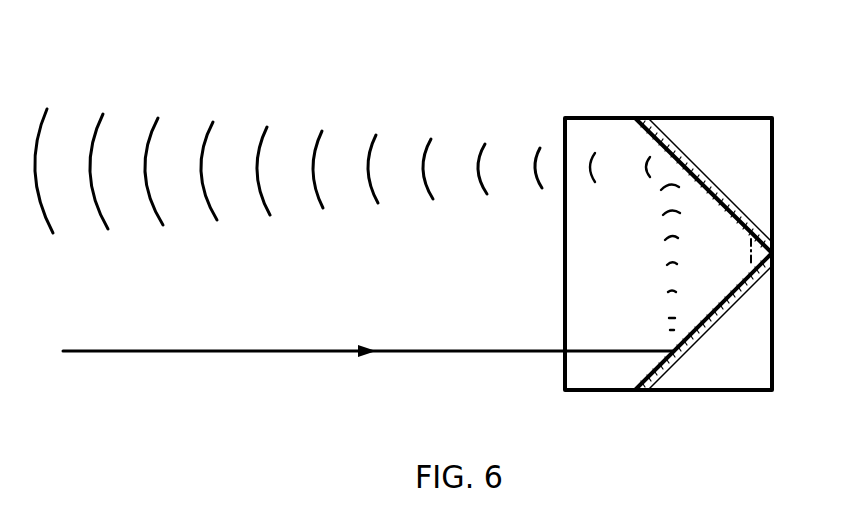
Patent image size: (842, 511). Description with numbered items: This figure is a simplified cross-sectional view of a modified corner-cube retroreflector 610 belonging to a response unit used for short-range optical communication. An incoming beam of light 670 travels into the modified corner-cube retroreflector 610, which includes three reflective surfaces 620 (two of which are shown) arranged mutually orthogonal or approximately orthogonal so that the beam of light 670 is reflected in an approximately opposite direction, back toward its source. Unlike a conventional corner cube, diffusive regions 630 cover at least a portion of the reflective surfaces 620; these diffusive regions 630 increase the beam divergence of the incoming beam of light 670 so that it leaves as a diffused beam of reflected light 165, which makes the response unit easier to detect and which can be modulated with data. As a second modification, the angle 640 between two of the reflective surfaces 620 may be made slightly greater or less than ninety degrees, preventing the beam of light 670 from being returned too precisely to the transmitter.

The diffused beam of reflected light 165 is at (334, 221).
The modified corner-cube retroreflector 610 is at (709, 84).
The reflective surfaces 620 is at (648, 131).
The diffusive regions 630 is at (708, 168).
The angle 640 is at (751, 244).
The beam of light 670 is at (236, 351).